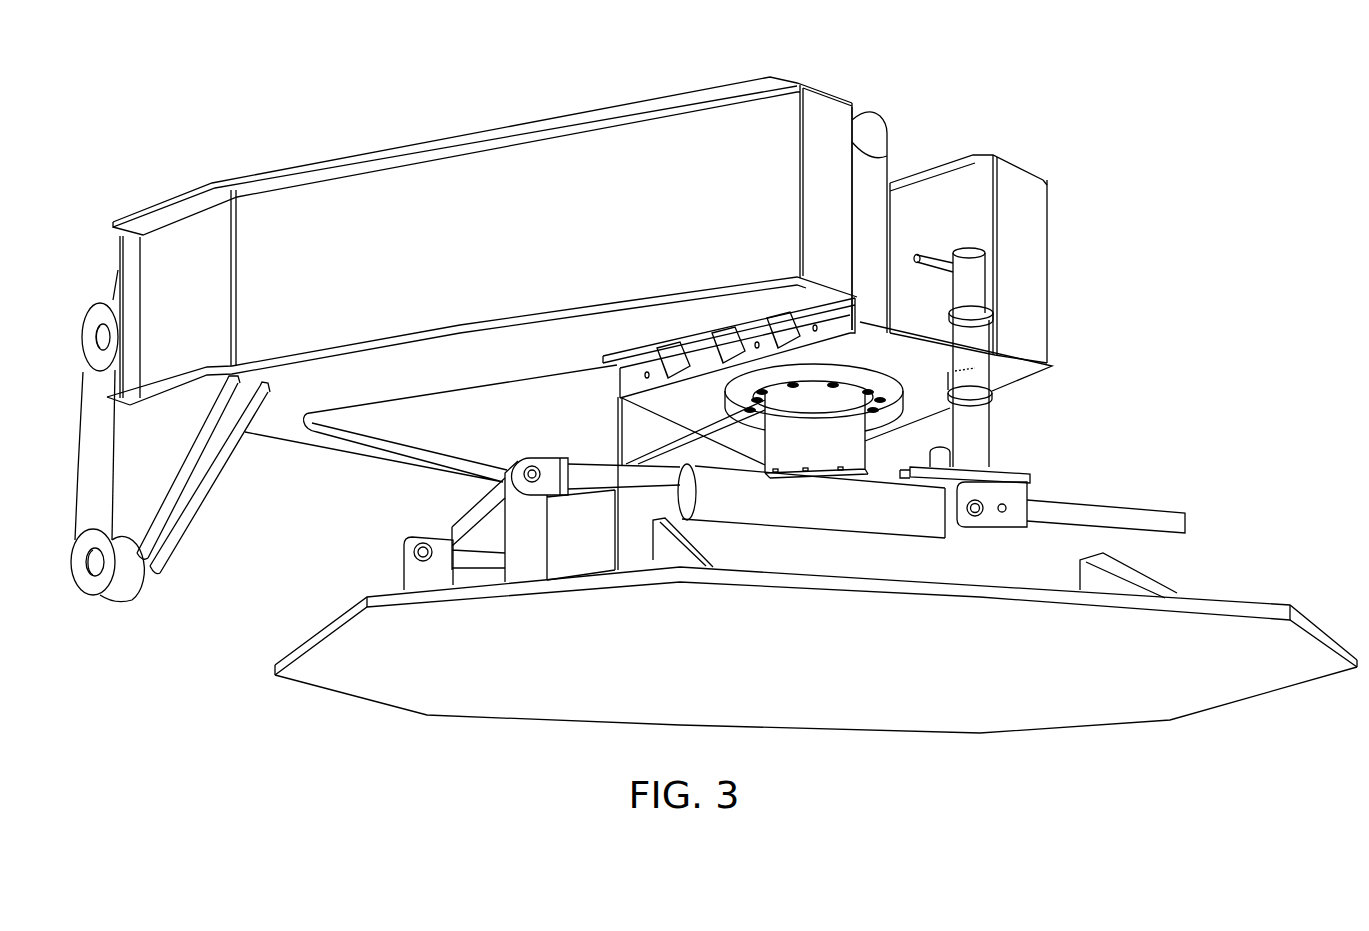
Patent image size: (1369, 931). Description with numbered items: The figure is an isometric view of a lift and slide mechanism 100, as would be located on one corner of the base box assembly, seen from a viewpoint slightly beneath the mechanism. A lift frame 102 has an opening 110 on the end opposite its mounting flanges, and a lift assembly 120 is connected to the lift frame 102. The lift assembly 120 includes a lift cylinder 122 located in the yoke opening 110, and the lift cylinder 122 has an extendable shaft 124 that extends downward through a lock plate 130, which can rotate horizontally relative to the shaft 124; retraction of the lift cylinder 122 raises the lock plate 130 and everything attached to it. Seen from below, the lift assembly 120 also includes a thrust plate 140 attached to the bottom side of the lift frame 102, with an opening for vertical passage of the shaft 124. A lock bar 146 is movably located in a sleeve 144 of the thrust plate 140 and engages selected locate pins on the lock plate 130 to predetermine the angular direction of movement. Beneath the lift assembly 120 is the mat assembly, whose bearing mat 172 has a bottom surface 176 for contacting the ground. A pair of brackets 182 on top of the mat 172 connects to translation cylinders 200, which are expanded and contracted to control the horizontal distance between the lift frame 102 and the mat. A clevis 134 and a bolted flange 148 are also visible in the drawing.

The lift and slide mechanism 100 is at (1079, 85).
The lift frame 102 is at (450, 140).
The opening 110 is at (930, 207).
The lift assembly 120 is at (1119, 400).
The lift cylinder 122 is at (870, 173).
The extendable shaft 124 is at (790, 428).
The lock plate 130 is at (1017, 473).
The clevis 134 is at (1015, 493).
The thrust plate 140 is at (912, 333).
The sleeve 144 is at (992, 398).
The lock bar 146 is at (983, 288).
The bolted flange 148 is at (733, 387).
The bearing mat 172 is at (273, 665).
The bottom surface 176 is at (1082, 682).
The brackets 182 is at (525, 542).
The translation cylinders 200 is at (850, 500).